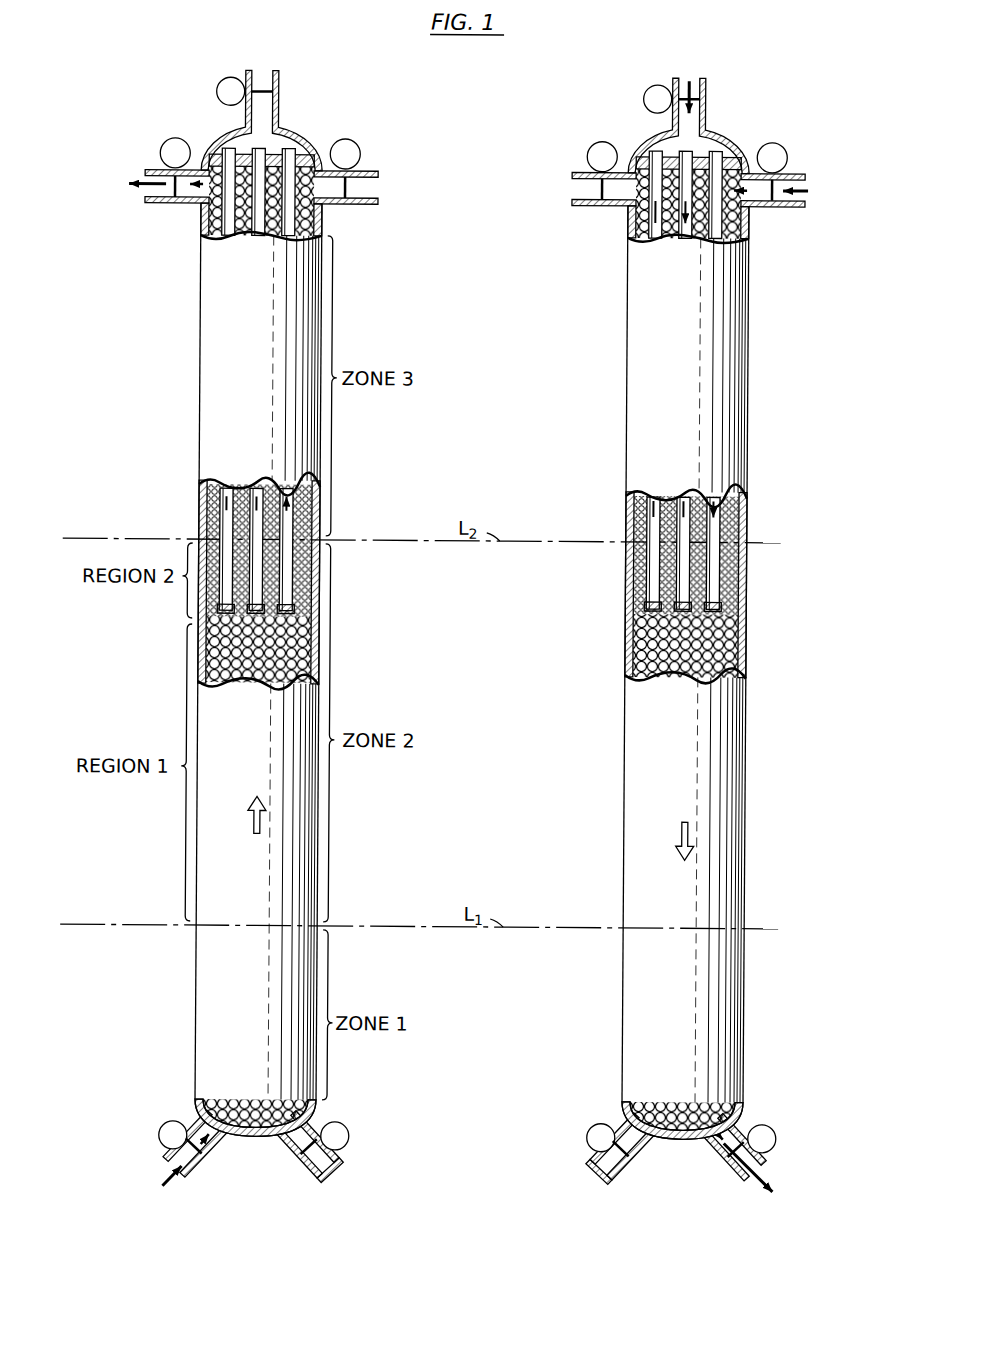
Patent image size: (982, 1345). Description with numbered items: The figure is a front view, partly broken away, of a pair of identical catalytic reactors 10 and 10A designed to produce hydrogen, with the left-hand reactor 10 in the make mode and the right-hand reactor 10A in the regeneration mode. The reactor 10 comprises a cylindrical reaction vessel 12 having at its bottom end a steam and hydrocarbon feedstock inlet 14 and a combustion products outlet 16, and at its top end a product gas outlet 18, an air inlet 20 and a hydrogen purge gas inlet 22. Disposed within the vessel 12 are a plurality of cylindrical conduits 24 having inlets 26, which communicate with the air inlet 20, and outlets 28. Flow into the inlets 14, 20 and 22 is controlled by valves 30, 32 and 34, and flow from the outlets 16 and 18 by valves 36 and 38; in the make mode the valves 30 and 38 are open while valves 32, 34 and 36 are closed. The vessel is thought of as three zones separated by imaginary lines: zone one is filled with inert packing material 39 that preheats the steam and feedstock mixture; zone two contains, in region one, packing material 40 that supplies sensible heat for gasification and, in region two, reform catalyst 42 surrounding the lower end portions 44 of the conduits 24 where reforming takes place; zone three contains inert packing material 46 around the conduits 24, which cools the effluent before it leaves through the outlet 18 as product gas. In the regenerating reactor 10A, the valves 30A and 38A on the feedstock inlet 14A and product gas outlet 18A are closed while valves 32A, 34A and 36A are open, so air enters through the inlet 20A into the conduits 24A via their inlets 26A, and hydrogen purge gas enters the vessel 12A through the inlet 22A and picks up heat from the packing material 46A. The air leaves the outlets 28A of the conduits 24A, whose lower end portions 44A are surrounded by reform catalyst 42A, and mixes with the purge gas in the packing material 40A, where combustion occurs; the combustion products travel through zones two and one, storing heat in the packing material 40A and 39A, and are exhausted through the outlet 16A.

The reactor 10 is at (205, 637).
The cylindrical reaction vessel 12 is at (321, 473).
The steam and hydrocarbon feedstock inlet 14 is at (228, 1138).
The combustion products outlet 16 is at (284, 1130).
The product gas outlet 18 is at (193, 207).
The oxygen containing gas inlet 20 is at (276, 124).
The hydrogen purge gas inlet 22 is at (323, 210).
The cylindrical conduits 24 is at (228, 606).
The inlets of the conduits 26 is at (277, 165).
The outlets of the conduits 28 is at (295, 645).
The valve 30 is at (167, 1126).
The valve 32 is at (217, 83).
The valve 34 is at (353, 145).
The valve 36 is at (350, 1128).
The valve 38 is at (161, 144).
The inert packing material 39 is at (243, 1103).
The packing material 40 is at (255, 584).
The reform catalyst 42 is at (262, 592).
The lower end portions of the conduits 44 is at (305, 609).
The inert packing material 46 is at (223, 484).
The reactor 10A is at (713, 642).
The reaction vessel 12A is at (710, 654).
The steam and hydrocarbon feedstock inlet 14A is at (631, 1149).
The combustion products outlet 16A is at (723, 1160).
The product gas outlet 18A is at (604, 206).
The oxygen containing gas inlet 20A is at (693, 126).
The hydrogen purge gas inlet 22A is at (771, 206).
The conduits 24A is at (648, 553).
The inlets of the conduits 26A is at (688, 151).
The outlets of the conduits 28A is at (715, 646).
The valve 30A is at (593, 1128).
The valve 32A is at (652, 96).
The valve 34A is at (788, 164).
The valve 36A is at (770, 1131).
The valve 38A is at (588, 161).
The packing material 39A is at (682, 1106).
The packing material 40A is at (687, 586).
The reform catalyst 42A is at (723, 553).
The lower end portions of the conduits 44A is at (721, 600).
The inert packing material 46A is at (686, 538).